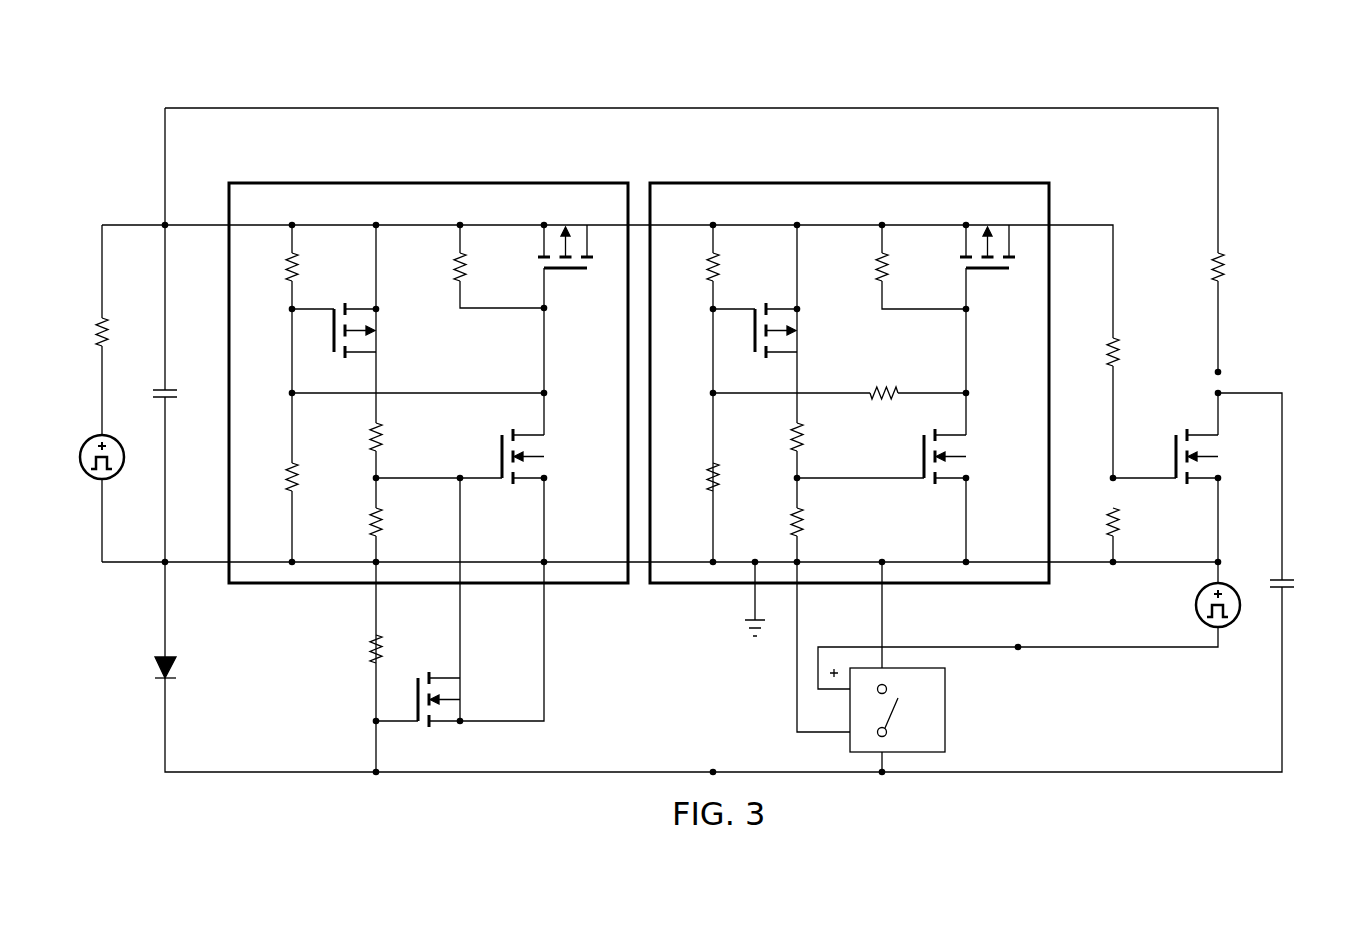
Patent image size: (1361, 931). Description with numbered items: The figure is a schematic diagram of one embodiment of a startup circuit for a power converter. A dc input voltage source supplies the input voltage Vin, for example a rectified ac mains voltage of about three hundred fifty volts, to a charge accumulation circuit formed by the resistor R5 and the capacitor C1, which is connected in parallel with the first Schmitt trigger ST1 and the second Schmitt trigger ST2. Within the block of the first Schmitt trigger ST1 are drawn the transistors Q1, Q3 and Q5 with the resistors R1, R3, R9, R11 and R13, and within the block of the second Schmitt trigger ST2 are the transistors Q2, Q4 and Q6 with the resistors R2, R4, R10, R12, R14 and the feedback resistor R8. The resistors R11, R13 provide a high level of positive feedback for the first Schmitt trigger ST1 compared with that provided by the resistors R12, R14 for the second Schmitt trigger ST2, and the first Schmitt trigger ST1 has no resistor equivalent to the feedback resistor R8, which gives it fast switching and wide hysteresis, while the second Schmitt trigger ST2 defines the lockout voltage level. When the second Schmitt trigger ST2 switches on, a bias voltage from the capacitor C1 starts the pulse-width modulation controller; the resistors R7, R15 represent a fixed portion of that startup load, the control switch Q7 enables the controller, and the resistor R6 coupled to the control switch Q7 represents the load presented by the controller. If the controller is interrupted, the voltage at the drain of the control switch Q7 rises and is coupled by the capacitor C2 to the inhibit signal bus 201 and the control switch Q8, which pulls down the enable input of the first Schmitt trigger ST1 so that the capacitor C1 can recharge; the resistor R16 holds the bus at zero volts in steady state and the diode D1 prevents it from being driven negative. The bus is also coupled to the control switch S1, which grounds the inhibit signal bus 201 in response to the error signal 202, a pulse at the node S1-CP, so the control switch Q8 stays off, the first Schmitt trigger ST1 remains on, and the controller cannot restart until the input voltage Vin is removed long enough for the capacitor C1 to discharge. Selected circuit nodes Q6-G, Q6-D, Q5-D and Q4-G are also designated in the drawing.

The inhibit signal bus 201 is at (619, 773).
The error signal 202 is at (1196, 605).
The first Schmitt trigger ST1 is at (450, 175).
The second Schmitt trigger ST2 is at (872, 175).
The input voltage Vin is at (86, 457).
The capacitor C1 is at (150, 394).
The capacitor C2 is at (1297, 586).
The diode D1 is at (147, 669).
The control switch S1 is at (887, 710).
The resistor R1 is at (445, 267).
The resistor R2 is at (867, 267).
The resistor R3 is at (277, 267).
The resistor R4 is at (698, 267).
The resistor R5 is at (87, 332).
The resistor R6 is at (1203, 267).
The resistor R7 is at (1098, 352).
The feedback resistor R8 is at (884, 382).
The resistor R9 is at (277, 477).
The resistor R10 is at (692, 477).
The resistor R11 is at (355, 437).
The resistor R12 is at (776, 437).
The resistor R13 is at (355, 522).
The resistor R14 is at (776, 522).
The resistor R15 is at (1092, 522).
The resistor R16 is at (355, 649).
The transistor Q1 is at (565, 234).
The transistor Q2 is at (987, 234).
The transistor Q3 is at (374, 330).
The transistor Q4 is at (795, 330).
The transistor Q5 is at (479, 456).
The transistor Q6 is at (900, 456).
The control switch Q7 is at (1185, 488).
The control switch Q8 is at (436, 699).
The gate node of Q6 Q6-G is at (582, 381).
The drain node of Q6 Q6-D is at (750, 212).
The drain node of Q5 Q5-D is at (1256, 358).
The gate node of Q4 Q4-G is at (751, 760).
The circuit node S1-CP is at (1059, 635).